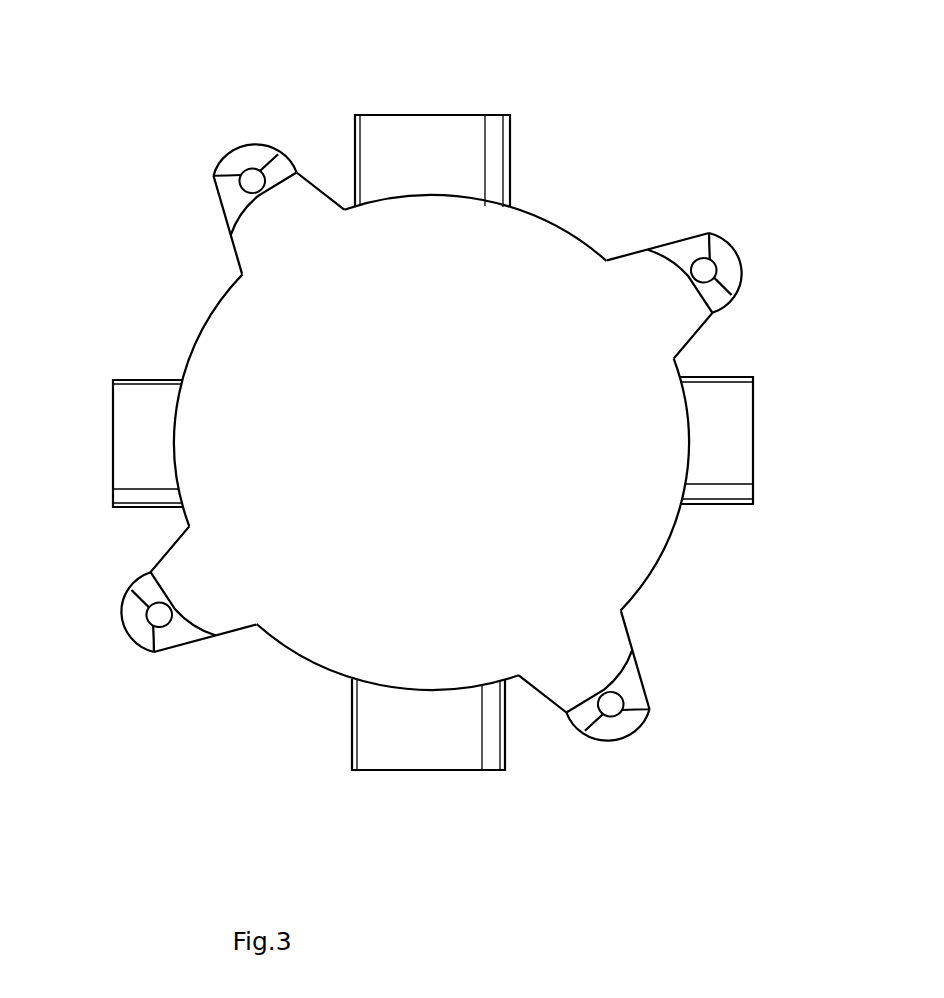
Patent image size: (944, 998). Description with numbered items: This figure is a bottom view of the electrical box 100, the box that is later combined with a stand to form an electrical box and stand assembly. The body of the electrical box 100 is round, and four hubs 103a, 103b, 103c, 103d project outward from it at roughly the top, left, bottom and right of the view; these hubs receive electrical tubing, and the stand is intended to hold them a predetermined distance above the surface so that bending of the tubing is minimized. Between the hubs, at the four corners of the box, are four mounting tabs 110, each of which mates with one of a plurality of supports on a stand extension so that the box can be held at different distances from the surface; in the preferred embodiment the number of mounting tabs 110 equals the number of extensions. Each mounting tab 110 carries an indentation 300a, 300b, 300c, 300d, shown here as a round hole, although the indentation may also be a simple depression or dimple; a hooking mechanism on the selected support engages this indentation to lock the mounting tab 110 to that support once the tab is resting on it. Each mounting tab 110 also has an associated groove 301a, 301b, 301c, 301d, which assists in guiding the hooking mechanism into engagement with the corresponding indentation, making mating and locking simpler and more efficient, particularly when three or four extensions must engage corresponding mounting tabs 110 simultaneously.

The electrical box 100 is at (657, 163).
The hub 103a is at (485, 98).
The hub 103b is at (108, 366).
The hub 103c is at (397, 778).
The hub 103d is at (728, 509).
The mounting tab 110 is at (282, 138).
The indentation 300a is at (251, 172).
The indentation 300b is at (150, 621).
The indentation 300c is at (620, 714).
The indentation 300d is at (720, 271).
The groove 301a is at (213, 198).
The groove 301b is at (184, 657).
The groove 301c is at (652, 698).
The groove 301d is at (716, 226).